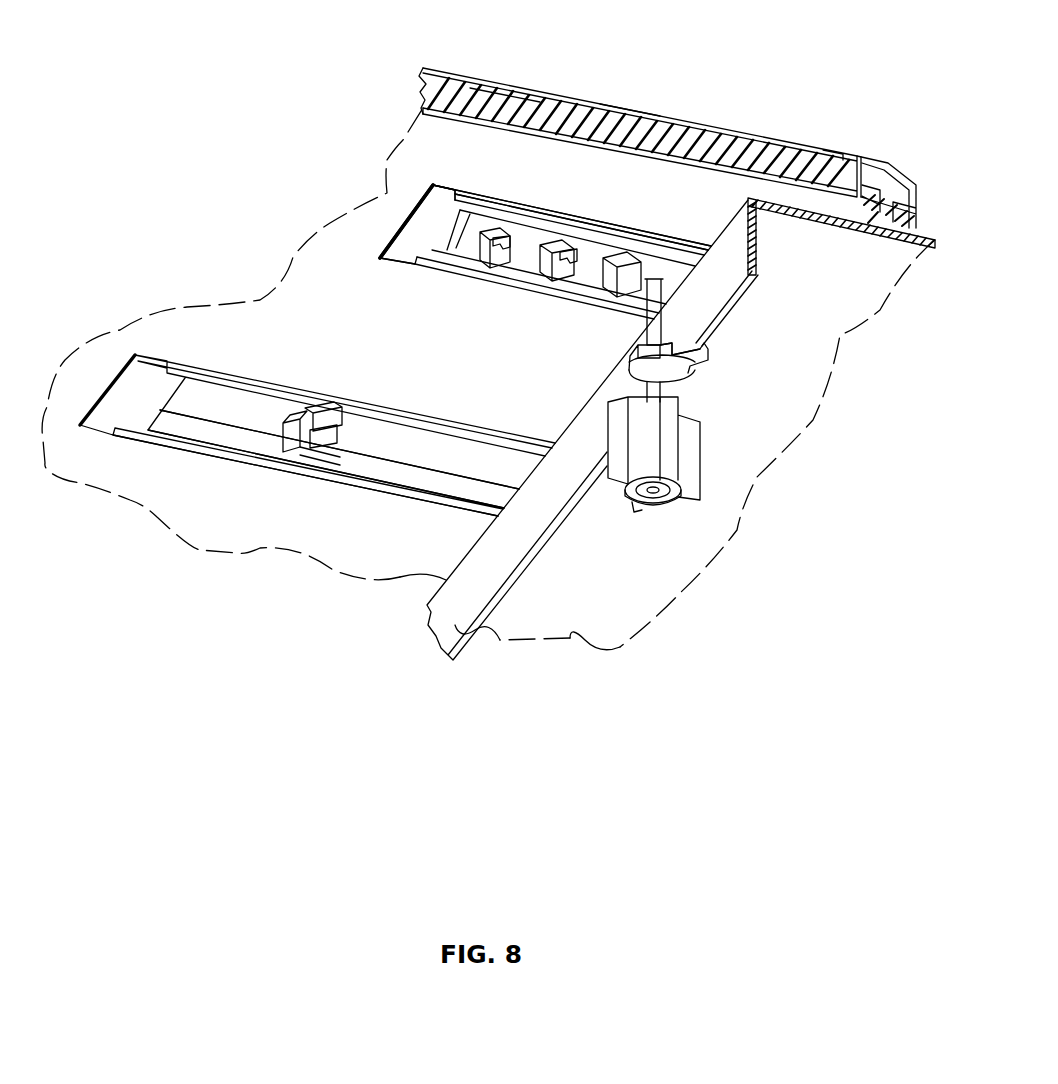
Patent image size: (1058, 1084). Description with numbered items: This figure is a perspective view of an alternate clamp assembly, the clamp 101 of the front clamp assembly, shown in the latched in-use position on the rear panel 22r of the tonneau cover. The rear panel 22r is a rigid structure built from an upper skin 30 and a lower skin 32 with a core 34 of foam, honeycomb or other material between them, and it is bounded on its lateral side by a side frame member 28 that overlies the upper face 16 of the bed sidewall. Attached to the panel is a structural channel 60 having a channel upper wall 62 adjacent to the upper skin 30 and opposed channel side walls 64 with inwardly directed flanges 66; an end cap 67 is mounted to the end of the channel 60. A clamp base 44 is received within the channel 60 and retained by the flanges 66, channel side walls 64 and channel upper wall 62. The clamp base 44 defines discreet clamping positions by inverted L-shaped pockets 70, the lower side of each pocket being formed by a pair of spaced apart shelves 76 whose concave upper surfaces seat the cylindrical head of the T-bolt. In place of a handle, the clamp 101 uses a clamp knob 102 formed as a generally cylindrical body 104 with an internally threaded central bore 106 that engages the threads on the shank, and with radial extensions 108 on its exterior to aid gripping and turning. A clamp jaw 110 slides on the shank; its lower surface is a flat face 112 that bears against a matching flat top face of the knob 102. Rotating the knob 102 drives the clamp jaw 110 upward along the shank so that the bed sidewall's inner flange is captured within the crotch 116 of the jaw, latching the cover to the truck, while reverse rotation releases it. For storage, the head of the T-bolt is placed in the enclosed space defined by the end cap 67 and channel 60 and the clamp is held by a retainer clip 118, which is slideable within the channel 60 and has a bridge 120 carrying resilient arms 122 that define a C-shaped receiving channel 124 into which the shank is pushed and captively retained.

The upper face 16 is at (867, 280).
The rear panel 22r is at (713, 118).
The side frame member 28 is at (884, 168).
The upper skin 30 is at (614, 106).
The lower skin 32 is at (413, 133).
The core 34 is at (510, 88).
The clamp base 44 is at (460, 285).
The channel 60 is at (530, 194).
The channel upper wall 62 is at (217, 393).
The channel side walls 64 is at (233, 432).
The flanges 66 is at (440, 198).
The end cap 67 is at (415, 240).
The L-shaped pockets 70 is at (510, 240).
The shelves 76 is at (610, 253).
The clamp 101 is at (820, 427).
The clamp knob 102 is at (628, 527).
The cylindrical body 104 is at (677, 463).
The central bore 106 is at (655, 494).
The radial extensions 108 is at (692, 447).
The clamp jaw 110 is at (722, 353).
The flat face 112 is at (677, 377).
The crotch 116 is at (690, 345).
The retainer clip 118 is at (328, 457).
The bridge 120 is at (300, 425).
The arms 122 is at (327, 426).
The receiving channel 124 is at (343, 443).